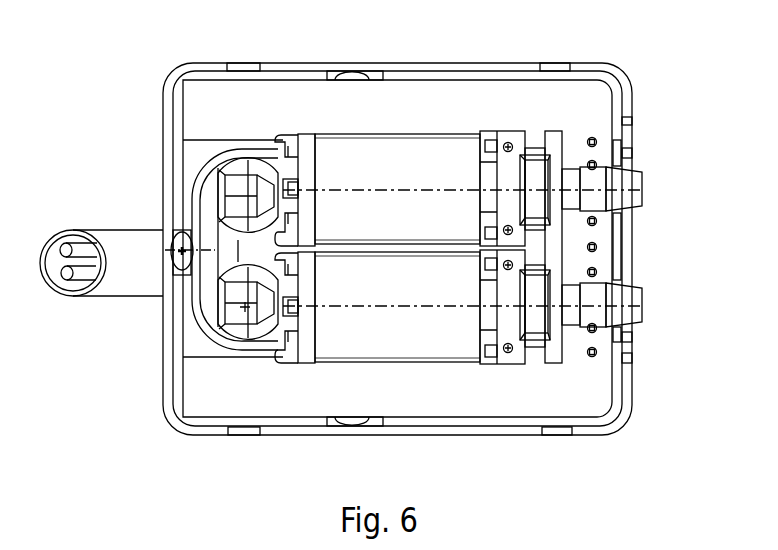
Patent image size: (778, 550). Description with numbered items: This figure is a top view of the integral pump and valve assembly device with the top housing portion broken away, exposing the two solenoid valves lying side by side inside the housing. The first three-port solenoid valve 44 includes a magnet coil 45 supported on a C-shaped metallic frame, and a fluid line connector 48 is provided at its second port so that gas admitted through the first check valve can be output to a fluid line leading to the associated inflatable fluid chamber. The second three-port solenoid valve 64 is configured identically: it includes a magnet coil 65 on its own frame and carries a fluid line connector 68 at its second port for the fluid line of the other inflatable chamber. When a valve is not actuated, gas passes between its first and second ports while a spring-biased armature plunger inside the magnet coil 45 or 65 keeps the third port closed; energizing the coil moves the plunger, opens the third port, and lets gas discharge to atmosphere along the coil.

The first 3/2-way valve 44 is at (283, 372).
The magnet coil 45 is at (381, 363).
The fluid line connector 48 is at (646, 313).
The second 3/2-way valve 64 is at (281, 126).
The magnet coil 65 is at (377, 133).
The fluid line connector 68 is at (646, 175).